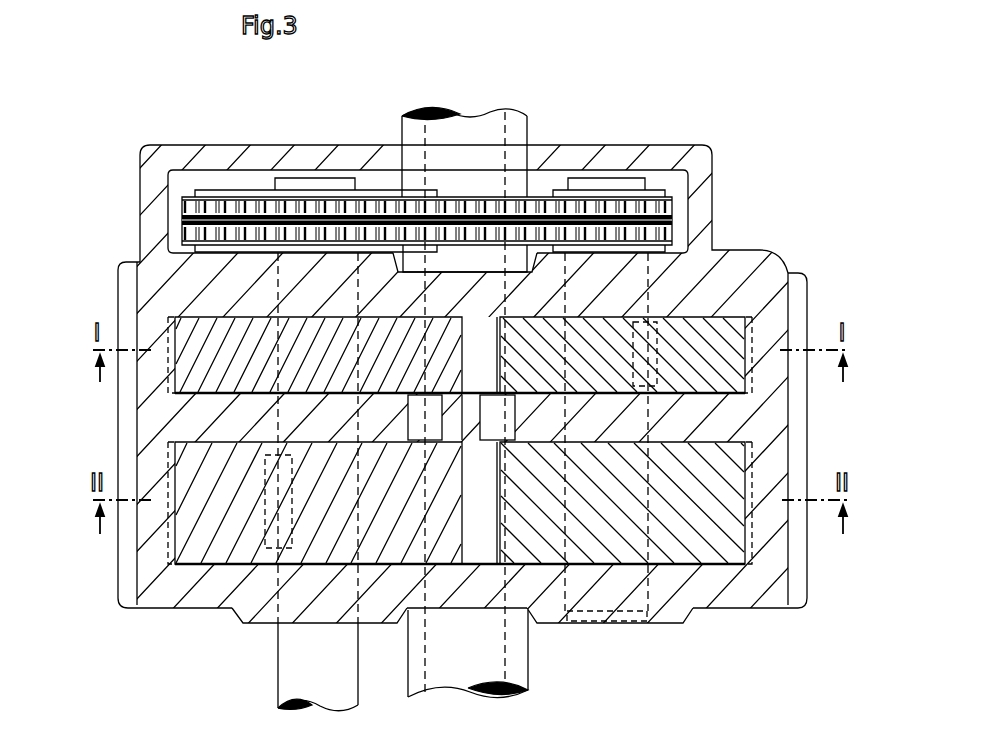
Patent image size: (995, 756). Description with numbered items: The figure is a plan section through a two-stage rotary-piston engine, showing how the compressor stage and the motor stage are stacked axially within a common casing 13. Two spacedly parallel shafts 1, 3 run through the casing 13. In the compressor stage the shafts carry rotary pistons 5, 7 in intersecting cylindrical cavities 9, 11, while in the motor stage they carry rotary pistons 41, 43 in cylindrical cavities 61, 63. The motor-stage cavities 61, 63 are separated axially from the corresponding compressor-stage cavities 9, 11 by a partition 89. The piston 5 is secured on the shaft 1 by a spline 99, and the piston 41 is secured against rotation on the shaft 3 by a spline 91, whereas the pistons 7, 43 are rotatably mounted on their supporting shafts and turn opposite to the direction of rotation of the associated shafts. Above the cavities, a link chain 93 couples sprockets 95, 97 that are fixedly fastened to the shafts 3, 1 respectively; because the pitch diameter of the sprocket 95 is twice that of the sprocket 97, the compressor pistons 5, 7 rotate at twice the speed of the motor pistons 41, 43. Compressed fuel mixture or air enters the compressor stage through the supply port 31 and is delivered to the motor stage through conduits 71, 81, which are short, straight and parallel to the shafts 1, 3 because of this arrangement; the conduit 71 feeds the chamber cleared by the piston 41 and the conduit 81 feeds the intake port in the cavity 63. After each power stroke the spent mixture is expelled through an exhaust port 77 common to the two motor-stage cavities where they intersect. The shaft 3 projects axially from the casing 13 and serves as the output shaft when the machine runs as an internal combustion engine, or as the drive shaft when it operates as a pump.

The shaft 1 is at (633, 612).
The shaft 3 is at (290, 670).
The rotary piston 5 is at (723, 323).
The rotary piston 7 is at (180, 340).
The cylindrical cavity 9 is at (200, 315).
The cylindrical cavity 11 is at (677, 310).
The casing 13 is at (757, 595).
The supply port 31 is at (463, 127).
The rotary piston 41 is at (192, 547).
The rotary piston 43 is at (697, 555).
The cylindrical cavity 61 is at (228, 570).
The cylindrical cavity 63 is at (547, 567).
The conduit 71 is at (414, 425).
The exhaust port 77 is at (472, 672).
The conduit 81 is at (486, 425).
The partition 89 is at (217, 422).
The spline 91 is at (268, 518).
The link chain 93 is at (377, 220).
The sprocket 95 is at (250, 197).
The sprocket 97 is at (657, 190).
The spline 99 is at (658, 368).